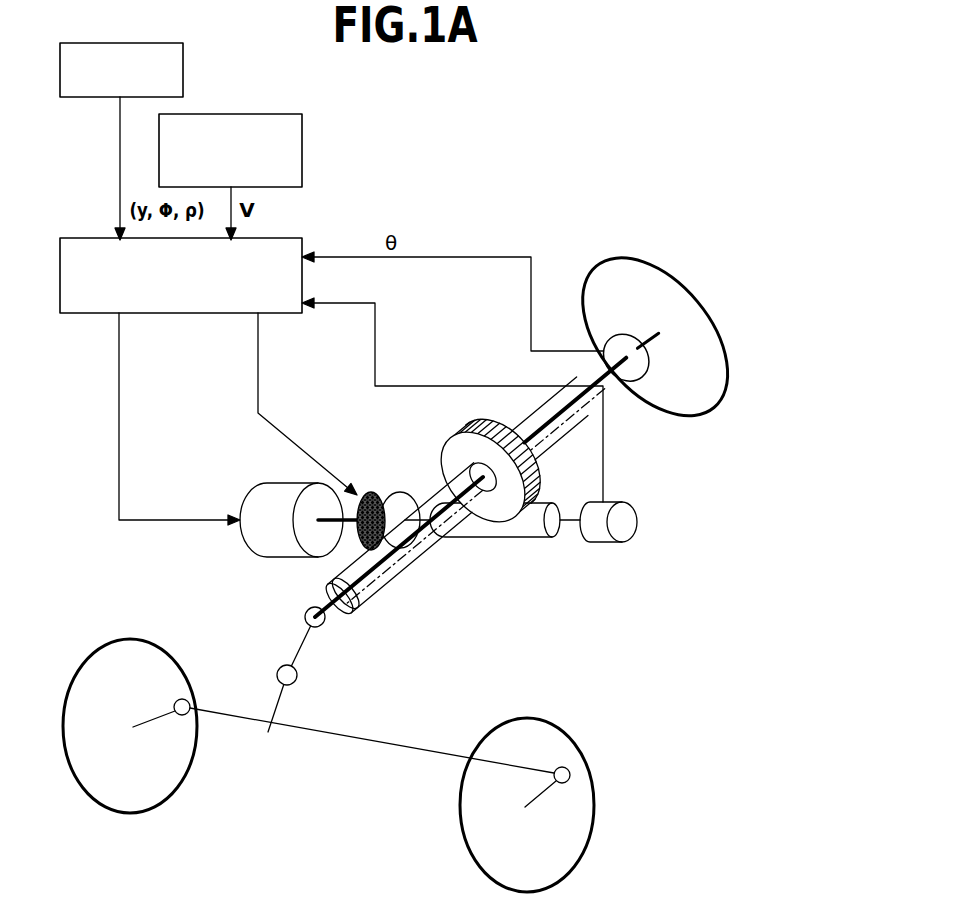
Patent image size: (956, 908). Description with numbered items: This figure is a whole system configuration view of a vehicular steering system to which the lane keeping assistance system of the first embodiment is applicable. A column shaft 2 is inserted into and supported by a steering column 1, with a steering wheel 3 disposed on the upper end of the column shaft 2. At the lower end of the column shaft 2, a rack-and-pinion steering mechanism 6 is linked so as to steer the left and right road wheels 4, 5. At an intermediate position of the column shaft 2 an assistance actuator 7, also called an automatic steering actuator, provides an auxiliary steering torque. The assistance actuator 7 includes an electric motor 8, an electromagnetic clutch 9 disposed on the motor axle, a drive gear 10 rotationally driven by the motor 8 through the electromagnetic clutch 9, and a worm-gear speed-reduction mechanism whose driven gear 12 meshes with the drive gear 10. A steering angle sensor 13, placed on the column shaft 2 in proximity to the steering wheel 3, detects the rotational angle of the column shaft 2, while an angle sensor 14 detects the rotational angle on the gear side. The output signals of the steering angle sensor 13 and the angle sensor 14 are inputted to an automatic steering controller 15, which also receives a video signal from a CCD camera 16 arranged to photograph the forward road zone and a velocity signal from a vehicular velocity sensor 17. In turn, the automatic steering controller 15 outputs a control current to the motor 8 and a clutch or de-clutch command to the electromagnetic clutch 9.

The steering column 1 is at (403, 571).
The column shaft 2 is at (368, 604).
The steering wheel 3 is at (645, 260).
The right road wheel 4 is at (533, 718).
The left road wheel 5 is at (131, 638).
The rack-and-pinion steering mechanism 6 is at (305, 740).
The assistance actuator 7 is at (460, 553).
The electric motor 8 is at (255, 485).
The electromagnetic clutch 9 is at (400, 491).
The drive gear 10 is at (487, 538).
The driven gear 12 is at (524, 536).
The steering angle sensor 13 is at (612, 336).
The angle sensor 14 is at (620, 507).
The automatic steering controller 15 is at (302, 240).
The CCD camera 16 is at (183, 62).
The vehicular velocity sensor 17 is at (302, 133).